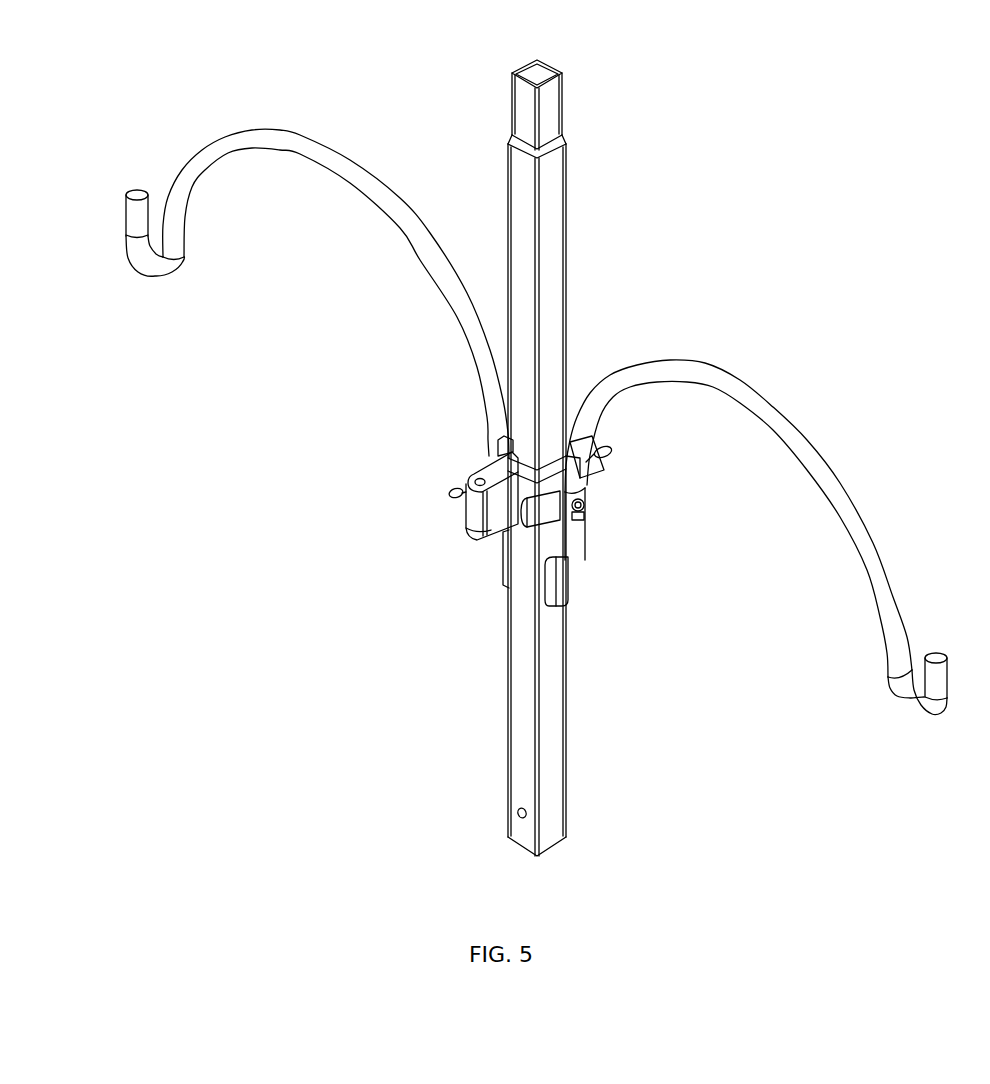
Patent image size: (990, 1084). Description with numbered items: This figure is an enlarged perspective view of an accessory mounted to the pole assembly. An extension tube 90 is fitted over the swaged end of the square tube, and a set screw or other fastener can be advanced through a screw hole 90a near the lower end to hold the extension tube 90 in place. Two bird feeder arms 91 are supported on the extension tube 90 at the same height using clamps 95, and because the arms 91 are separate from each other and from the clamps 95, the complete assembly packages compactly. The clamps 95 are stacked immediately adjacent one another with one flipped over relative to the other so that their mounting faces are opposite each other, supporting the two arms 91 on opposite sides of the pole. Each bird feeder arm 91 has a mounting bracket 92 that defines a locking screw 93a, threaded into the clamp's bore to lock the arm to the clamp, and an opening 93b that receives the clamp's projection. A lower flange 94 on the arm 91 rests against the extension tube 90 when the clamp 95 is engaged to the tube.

The extension tube 90 is at (518, 723).
The screw hole 90a is at (514, 813).
The bird feeder arm 91 is at (312, 157).
The mounting bracket 92 is at (577, 543).
The locking screw 93a is at (583, 508).
The opening 93b is at (583, 517).
The lower flange 94 is at (560, 600).
The clamp 95 is at (473, 512).